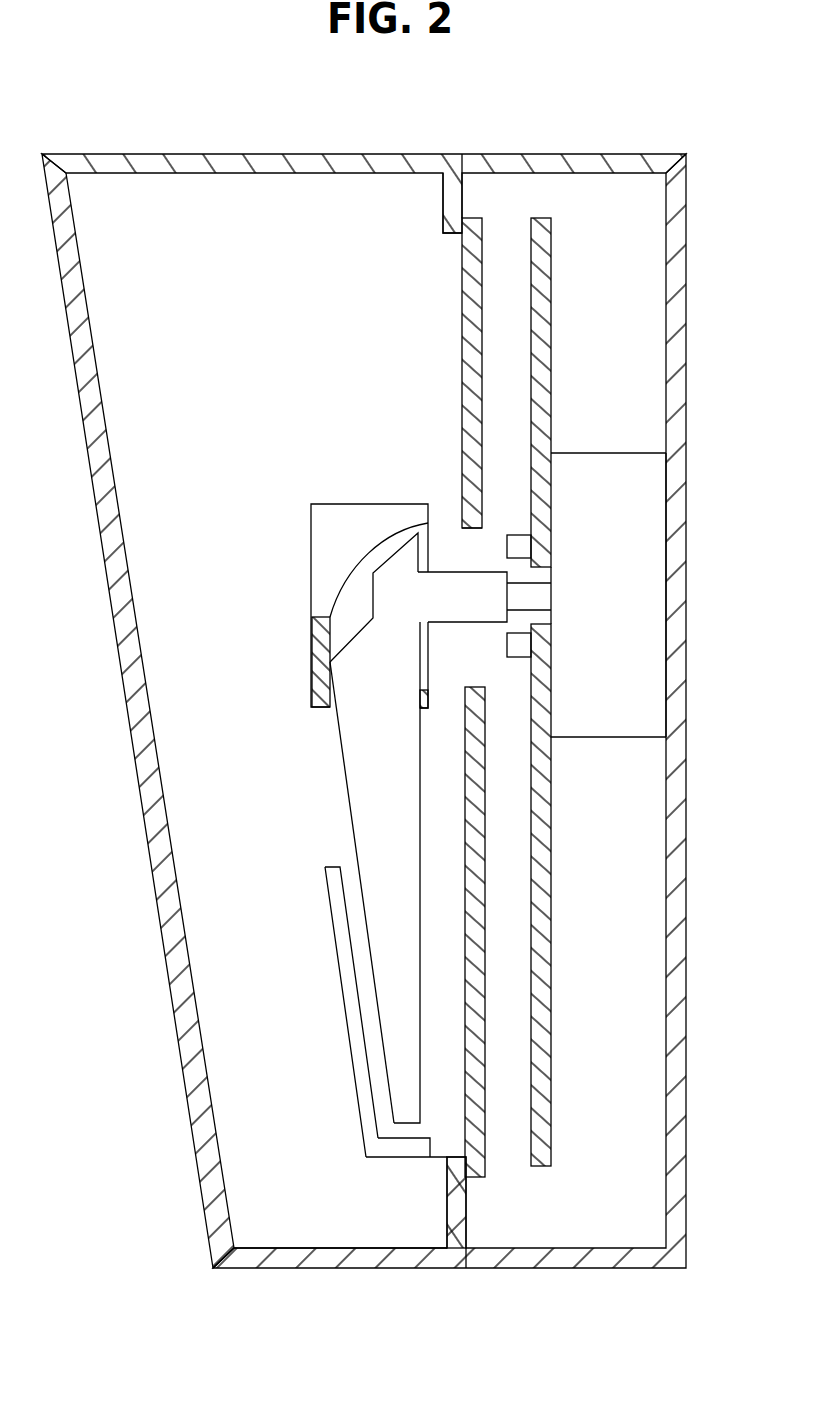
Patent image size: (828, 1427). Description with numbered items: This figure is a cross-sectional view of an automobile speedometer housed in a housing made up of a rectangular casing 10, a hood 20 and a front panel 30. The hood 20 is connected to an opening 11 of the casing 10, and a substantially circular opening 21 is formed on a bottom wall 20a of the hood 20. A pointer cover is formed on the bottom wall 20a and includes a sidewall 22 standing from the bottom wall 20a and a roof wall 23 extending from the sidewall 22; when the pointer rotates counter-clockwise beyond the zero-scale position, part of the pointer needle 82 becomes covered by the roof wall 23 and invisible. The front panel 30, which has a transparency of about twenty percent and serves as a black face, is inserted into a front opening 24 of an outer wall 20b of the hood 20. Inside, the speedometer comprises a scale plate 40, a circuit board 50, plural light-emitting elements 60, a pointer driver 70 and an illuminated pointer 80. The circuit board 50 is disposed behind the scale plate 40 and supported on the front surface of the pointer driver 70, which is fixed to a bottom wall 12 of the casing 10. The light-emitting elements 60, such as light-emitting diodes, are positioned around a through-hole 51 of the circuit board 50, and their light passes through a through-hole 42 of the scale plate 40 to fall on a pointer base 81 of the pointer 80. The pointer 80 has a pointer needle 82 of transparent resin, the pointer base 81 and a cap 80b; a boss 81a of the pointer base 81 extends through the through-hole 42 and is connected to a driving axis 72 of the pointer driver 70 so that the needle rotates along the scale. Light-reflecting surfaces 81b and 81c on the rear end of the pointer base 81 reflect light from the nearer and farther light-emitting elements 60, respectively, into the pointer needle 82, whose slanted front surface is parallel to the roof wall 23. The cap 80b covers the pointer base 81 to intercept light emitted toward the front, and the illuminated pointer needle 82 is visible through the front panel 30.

The casing 10 is at (706, 362).
The opening 11 is at (507, 1268).
The bottom wall 12 is at (672, 1032).
The hood 20 is at (399, 717).
The bottom wall 20a is at (447, 1195).
The outer wall 20b is at (312, 1268).
The opening 21 is at (458, 234).
The sidewall 22 is at (380, 1157).
The roof wall 23 is at (342, 987).
The front opening 24 is at (254, 1249).
The front panel 30 is at (91, 614).
The scale plate 40 is at (435, 697).
The through-hole 42 is at (468, 538).
The circuit board 50 is at (566, 682).
The through-hole 51 is at (537, 618).
The light-emitting element 60 is at (523, 680).
The pointer driver 70 is at (627, 723).
The driving axis 72 is at (550, 575).
The pointer 80 is at (329, 560).
The cap 80b is at (318, 535).
The pointer base 81 is at (367, 791).
The boss 81a is at (452, 607).
The light-reflecting surface 81b is at (352, 640).
The light-reflecting surface 81c is at (405, 537).
The pointer needle 82 is at (383, 920).